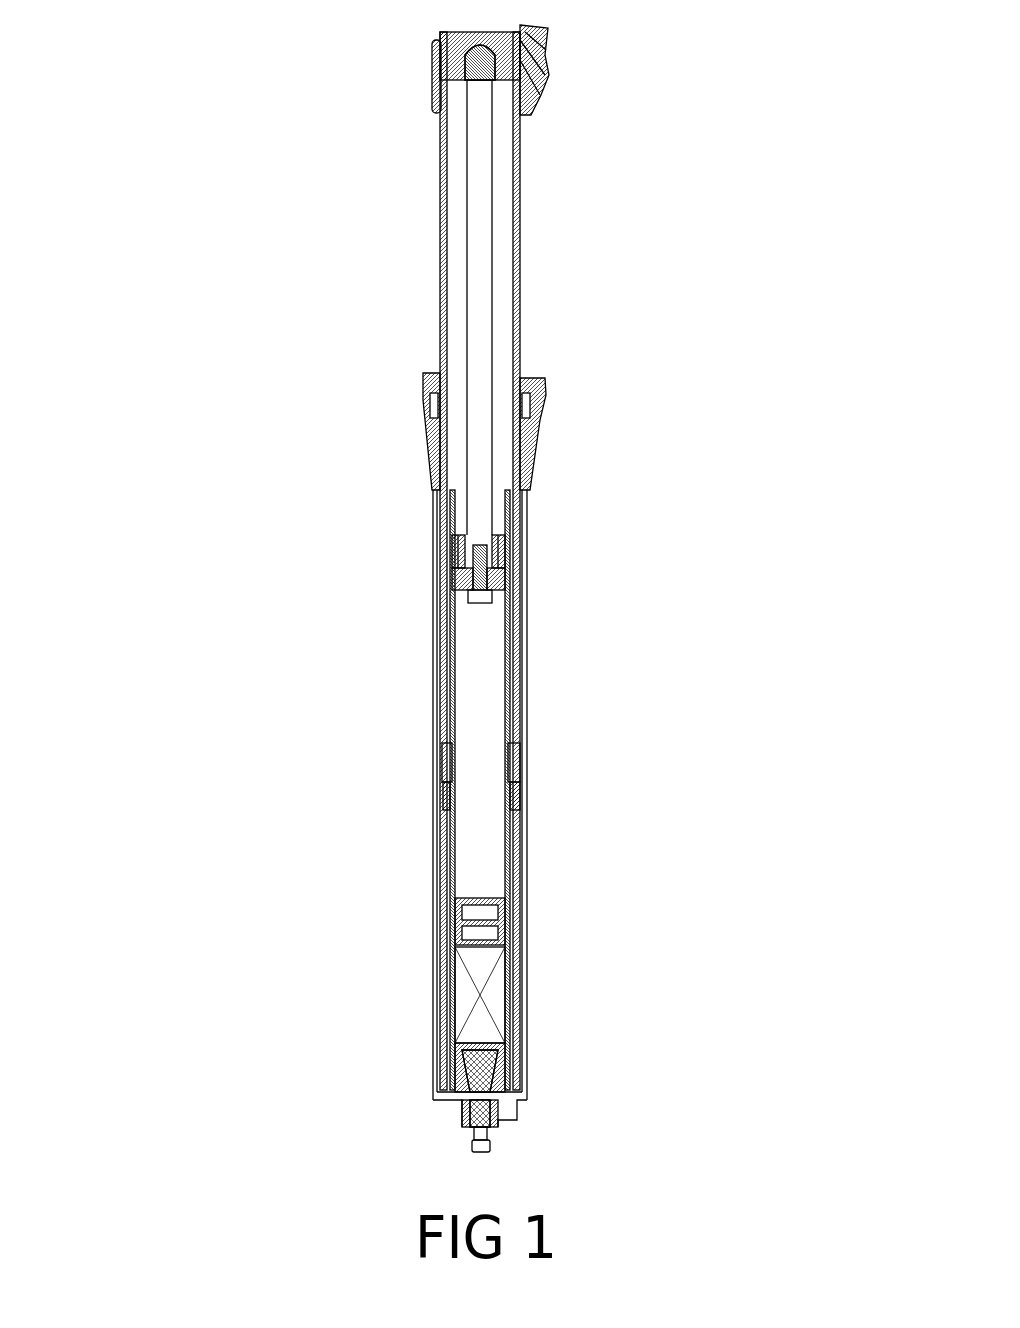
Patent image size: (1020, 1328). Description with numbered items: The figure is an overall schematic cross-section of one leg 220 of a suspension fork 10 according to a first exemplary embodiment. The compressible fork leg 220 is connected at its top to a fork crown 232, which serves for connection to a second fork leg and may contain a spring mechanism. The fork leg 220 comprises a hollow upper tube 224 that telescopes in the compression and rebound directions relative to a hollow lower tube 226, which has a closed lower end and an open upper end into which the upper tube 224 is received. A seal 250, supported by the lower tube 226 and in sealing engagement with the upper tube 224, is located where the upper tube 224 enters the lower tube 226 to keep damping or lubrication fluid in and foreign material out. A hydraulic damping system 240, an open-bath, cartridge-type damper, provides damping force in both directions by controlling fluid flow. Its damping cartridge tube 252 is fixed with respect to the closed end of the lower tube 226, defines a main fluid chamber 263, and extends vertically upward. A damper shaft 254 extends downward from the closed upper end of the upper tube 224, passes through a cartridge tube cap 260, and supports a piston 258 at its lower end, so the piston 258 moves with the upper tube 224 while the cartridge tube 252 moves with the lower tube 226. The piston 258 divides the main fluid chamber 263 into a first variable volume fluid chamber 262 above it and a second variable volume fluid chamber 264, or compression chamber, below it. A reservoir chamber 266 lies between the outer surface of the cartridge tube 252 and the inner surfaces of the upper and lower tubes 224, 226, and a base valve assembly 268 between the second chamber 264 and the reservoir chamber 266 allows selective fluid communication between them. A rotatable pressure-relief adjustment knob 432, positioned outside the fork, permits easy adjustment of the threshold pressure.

The suspension fork 10 is at (170, 112).
The fork leg 220 is at (392, 233).
The upper tube 224 is at (520, 294).
The fork crown 232 is at (533, 80).
The damper shaft 254 is at (482, 248).
The seal 250 is at (428, 372).
The hydraulic damping system 240 is at (580, 990).
The lower tube 226 is at (527, 815).
The damping cartridge tube 252 is at (508, 867).
The cartridge tube cap 260 is at (500, 533).
The first variable volume fluid chamber 262 is at (465, 570).
The piston 258 is at (505, 578).
The second variable volume fluid chamber 264 is at (487, 725).
The main fluid chamber 263 is at (460, 840).
The reservoir chamber 266 is at (445, 957).
The base valve assembly 268 is at (440, 1019).
The pressure-relief adjustment knob 432 is at (470, 1145).